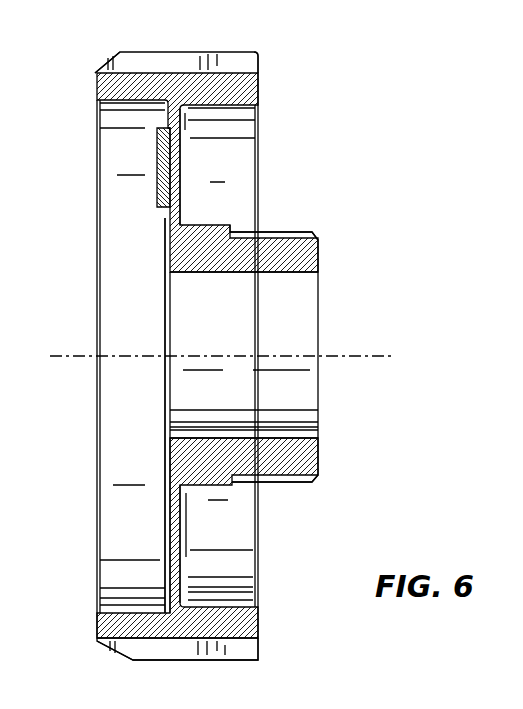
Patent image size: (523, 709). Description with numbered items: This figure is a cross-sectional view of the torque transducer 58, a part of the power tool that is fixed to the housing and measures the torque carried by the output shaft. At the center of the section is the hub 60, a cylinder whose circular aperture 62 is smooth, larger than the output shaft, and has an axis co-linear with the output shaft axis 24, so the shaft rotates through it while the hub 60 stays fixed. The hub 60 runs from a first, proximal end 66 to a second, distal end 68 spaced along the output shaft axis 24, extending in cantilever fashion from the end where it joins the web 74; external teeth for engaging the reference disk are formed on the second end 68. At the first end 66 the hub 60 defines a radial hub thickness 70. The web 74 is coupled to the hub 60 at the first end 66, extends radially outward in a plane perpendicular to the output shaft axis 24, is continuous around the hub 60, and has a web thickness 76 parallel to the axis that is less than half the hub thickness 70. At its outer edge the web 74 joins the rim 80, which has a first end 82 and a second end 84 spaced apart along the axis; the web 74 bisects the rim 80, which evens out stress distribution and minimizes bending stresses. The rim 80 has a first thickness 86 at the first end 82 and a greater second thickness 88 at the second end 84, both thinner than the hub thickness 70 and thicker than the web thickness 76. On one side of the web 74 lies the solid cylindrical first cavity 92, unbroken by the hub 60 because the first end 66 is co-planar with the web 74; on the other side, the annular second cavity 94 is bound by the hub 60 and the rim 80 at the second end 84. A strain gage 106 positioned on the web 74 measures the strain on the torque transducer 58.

The torque transducer 58 is at (363, 87).
The rim first end 82 is at (95, 72).
The rim second end 84 is at (258, 67).
The first rim thickness 86 is at (148, 100).
The second rim thickness 88 is at (235, 108).
The strain gage 106 is at (157, 165).
The web 74 is at (181, 156).
The hub second end 68 is at (320, 258).
The hub first end 66 is at (167, 240).
The hub thickness 70 is at (205, 225).
The output shaft axis 24 is at (350, 356).
The circular aperture 62 is at (296, 435).
The hub 60 is at (300, 458).
The web thickness 76 is at (228, 520).
The first cavity 92 is at (123, 613).
The second cavity 94 is at (233, 600).
The rim 80 is at (232, 633).